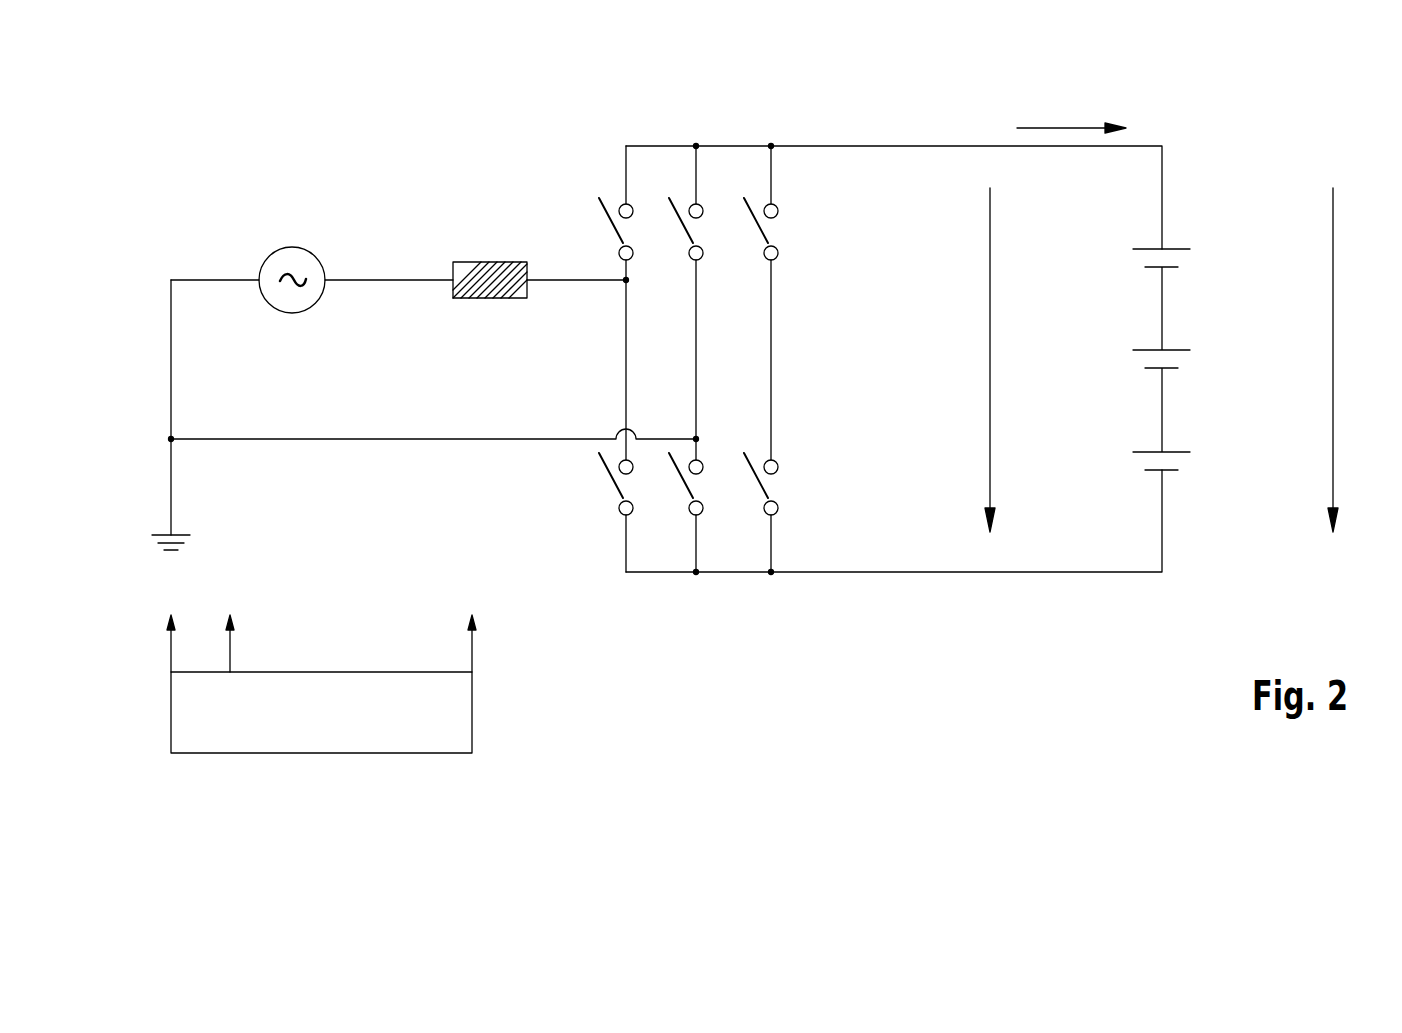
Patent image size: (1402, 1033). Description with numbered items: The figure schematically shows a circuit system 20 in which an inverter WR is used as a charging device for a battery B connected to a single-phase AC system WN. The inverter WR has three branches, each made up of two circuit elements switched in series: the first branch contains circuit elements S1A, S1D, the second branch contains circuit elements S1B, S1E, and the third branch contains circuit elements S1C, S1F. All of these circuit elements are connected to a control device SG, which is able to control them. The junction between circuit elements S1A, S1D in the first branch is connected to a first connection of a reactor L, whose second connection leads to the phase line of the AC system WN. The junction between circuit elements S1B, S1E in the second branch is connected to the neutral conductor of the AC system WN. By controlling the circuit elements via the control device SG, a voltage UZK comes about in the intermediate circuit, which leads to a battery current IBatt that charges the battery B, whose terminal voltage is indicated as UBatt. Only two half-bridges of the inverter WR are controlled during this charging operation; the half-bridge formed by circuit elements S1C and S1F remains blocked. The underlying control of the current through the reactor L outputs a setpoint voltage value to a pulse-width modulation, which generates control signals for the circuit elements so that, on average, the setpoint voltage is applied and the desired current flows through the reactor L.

The AC system WN is at (272, 205).
The reactor L is at (490, 262).
The circuit element S1A is at (612, 224).
The circuit element S1B is at (668, 198).
The circuit element S1C is at (762, 231).
The circuit element S1D is at (612, 480).
The circuit element S1E is at (686, 490).
The circuit element S1F is at (762, 488).
The inverter WR is at (812, 312).
The battery current IBatt is at (1071, 105).
The intermediate circuit voltage UZK is at (1013, 360).
The battery voltage UBatt is at (1361, 360).
The battery B is at (1222, 328).
The circuit system 20 is at (1075, 633).
The control device SG is at (408, 753).